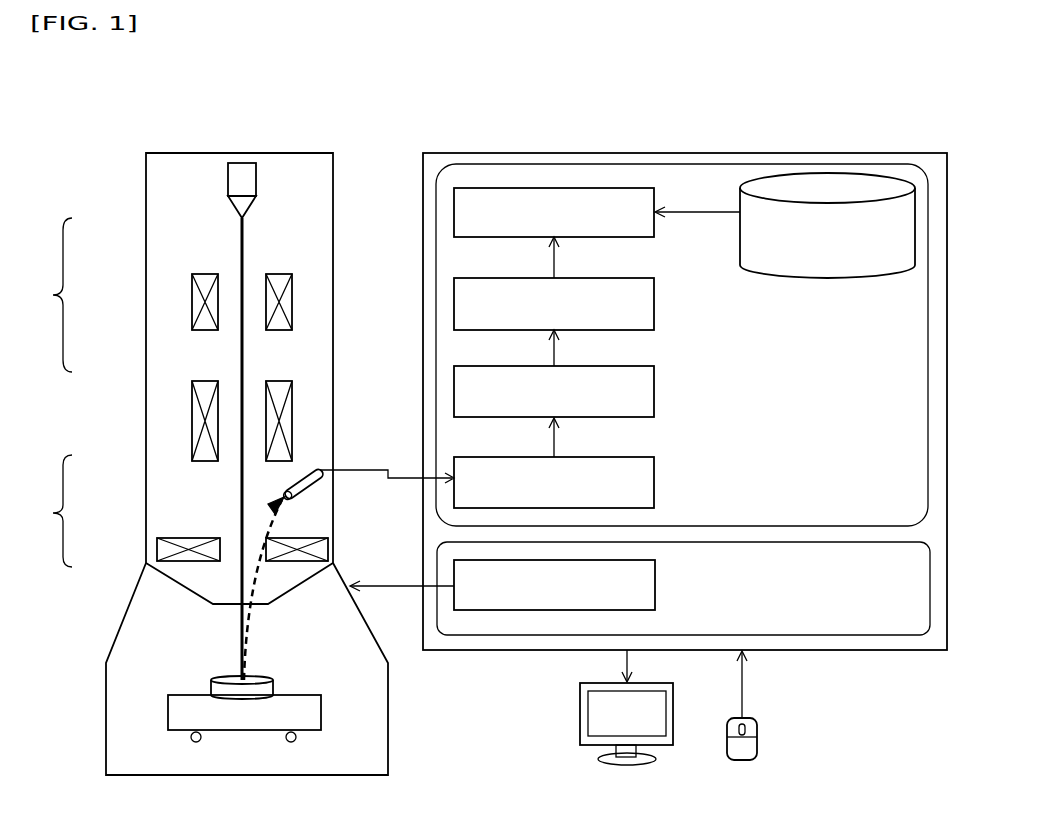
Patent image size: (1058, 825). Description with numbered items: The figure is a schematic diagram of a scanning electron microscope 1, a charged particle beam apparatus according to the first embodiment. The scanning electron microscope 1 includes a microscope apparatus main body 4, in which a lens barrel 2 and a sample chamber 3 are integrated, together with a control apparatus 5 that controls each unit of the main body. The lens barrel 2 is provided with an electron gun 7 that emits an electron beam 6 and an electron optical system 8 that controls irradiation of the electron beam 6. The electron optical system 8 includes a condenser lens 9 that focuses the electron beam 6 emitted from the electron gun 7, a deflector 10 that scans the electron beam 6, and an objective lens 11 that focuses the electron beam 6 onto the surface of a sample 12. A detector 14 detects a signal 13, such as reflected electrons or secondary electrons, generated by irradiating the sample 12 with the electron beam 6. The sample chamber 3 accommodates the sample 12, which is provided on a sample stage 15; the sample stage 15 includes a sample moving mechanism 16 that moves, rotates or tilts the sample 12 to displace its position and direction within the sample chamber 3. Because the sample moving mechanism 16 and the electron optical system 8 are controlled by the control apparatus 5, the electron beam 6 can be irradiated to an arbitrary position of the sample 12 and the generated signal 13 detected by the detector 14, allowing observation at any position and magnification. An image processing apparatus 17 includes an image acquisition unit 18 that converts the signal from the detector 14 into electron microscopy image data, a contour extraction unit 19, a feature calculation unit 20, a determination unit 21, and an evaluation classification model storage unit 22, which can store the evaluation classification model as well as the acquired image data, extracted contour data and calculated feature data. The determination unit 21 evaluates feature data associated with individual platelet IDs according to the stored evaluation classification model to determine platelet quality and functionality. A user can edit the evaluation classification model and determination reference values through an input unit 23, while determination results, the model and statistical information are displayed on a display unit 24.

The scanning electron microscope 1 is at (170, 146).
The lens barrel 2 is at (146, 510).
The sample chamber 3 is at (137, 610).
The microscope apparatus main body 4 is at (51, 511).
The control apparatus 5 is at (656, 583).
The electron beam 6 is at (242, 615).
The electron gun 7 is at (248, 163).
The electron optical system 8 is at (52, 295).
The condenser lens 9 is at (192, 293).
The deflector 10 is at (192, 390).
The objective lens 11 is at (180, 536).
The sample 12 is at (262, 677).
The signal 13 is at (250, 632).
The detector 14 is at (320, 462).
The sample stage 15 is at (168, 710).
The sample moving mechanism 16 is at (284, 738).
The image processing apparatus 17 is at (557, 163).
The image acquisition unit 18 is at (655, 481).
The contour extraction unit 19 is at (655, 386).
The feature calculation unit 20 is at (655, 298).
The determination unit 21 is at (655, 188).
The evaluation classification model storage unit 22 is at (822, 278).
The input unit 23 is at (757, 738).
The display unit 24 is at (580, 723).